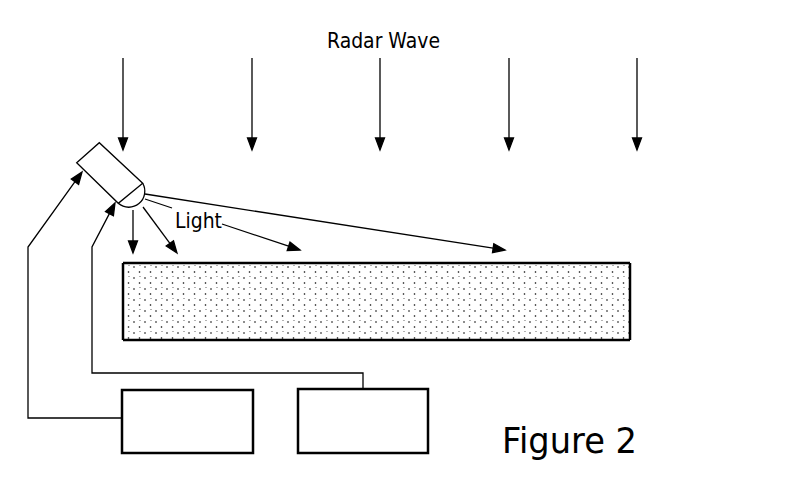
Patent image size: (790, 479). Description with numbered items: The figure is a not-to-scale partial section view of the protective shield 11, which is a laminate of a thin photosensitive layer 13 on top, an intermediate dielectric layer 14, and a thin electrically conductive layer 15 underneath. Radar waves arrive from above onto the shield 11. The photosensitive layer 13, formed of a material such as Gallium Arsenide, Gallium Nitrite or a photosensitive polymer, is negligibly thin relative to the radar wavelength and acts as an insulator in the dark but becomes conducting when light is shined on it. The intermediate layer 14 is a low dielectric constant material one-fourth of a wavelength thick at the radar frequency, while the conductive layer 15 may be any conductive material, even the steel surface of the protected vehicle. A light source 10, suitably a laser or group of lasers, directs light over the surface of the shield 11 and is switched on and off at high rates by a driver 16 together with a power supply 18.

The light source 10 is at (92, 148).
The shield 11 is at (441, 298).
The layer 13 is at (632, 263).
The intermediate layer 14 is at (630, 297).
The layer 15 is at (632, 340).
The driver 16 is at (253, 419).
The power supply 18 is at (428, 420).